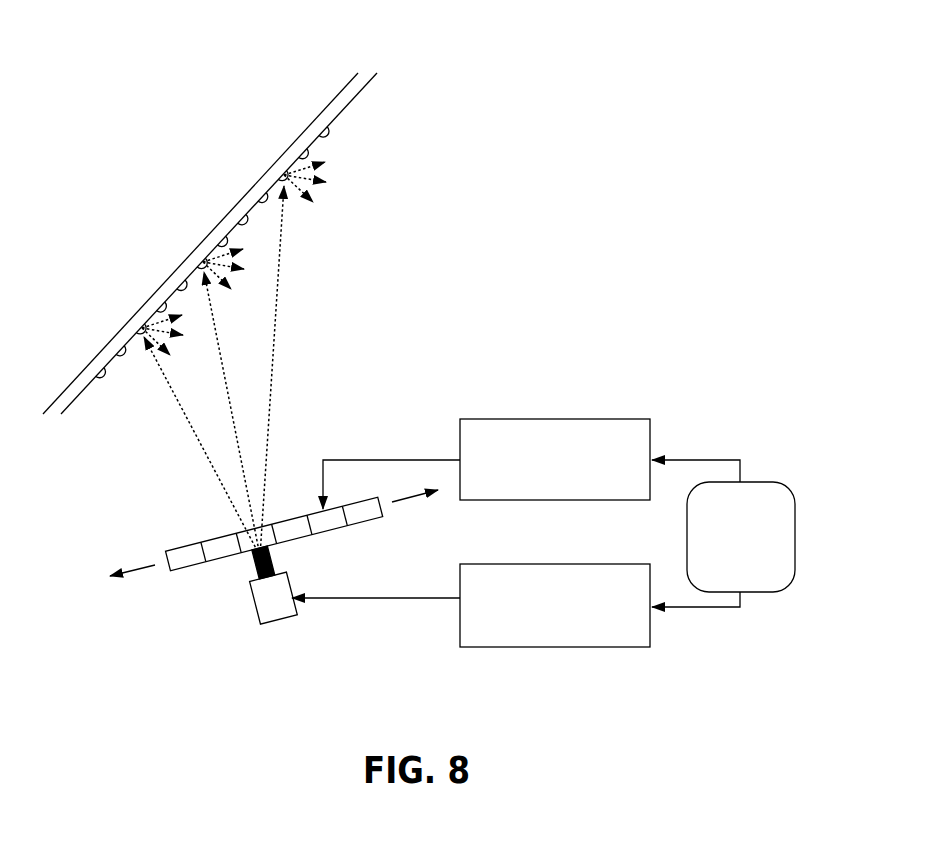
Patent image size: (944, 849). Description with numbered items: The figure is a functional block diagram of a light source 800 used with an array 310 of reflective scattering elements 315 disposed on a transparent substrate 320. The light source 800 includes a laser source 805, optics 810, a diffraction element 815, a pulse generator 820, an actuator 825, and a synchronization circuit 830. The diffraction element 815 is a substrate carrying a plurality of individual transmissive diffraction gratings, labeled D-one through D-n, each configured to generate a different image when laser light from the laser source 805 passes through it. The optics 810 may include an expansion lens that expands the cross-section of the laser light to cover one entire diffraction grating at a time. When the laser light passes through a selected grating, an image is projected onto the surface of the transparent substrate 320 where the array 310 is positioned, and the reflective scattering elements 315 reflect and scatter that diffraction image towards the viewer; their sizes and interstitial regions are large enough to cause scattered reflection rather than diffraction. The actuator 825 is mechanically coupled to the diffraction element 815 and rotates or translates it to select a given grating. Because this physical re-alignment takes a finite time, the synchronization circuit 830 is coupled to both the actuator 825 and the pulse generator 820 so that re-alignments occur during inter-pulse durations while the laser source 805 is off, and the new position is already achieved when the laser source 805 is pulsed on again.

The transparent substrate 320 is at (328, 106).
The reflective scattering element 315 is at (102, 378).
The array of reflective scattering elements 310 is at (341, 323).
The light source 800 is at (703, 314).
The diffraction element 815 is at (178, 547).
The optics 810 is at (252, 573).
The laser source 805 is at (279, 626).
The actuator 825 is at (624, 471).
The pulse generator 820 is at (632, 631).
The synchronization circuit 830 is at (755, 574).